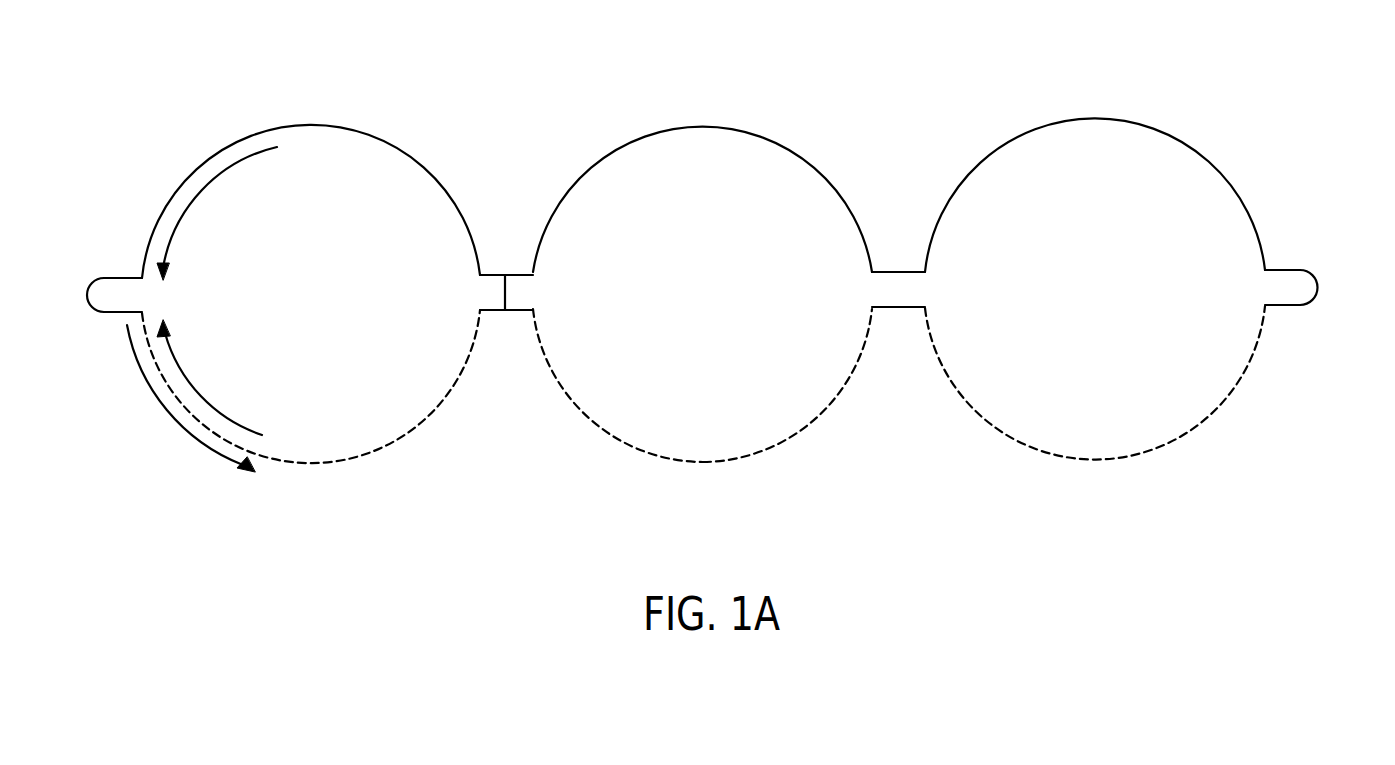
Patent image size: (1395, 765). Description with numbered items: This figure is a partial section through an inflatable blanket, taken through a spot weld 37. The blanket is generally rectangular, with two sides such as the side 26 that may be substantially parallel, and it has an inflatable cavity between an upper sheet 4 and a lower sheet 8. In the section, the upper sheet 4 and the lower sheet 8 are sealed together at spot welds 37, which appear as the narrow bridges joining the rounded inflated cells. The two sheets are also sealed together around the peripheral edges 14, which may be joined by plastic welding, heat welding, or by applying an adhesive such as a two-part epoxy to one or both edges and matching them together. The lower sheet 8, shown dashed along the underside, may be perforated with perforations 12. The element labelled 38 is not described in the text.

The upper sheet 4 is at (710, 119).
The lower sheet 8 is at (655, 457).
The perforations 12 is at (785, 445).
The peripheral edges 14 is at (1280, 270).
The side 26 is at (1318, 288).
The spot weld 37 is at (892, 272).
The connecting passage with partition 38 is at (505, 275).